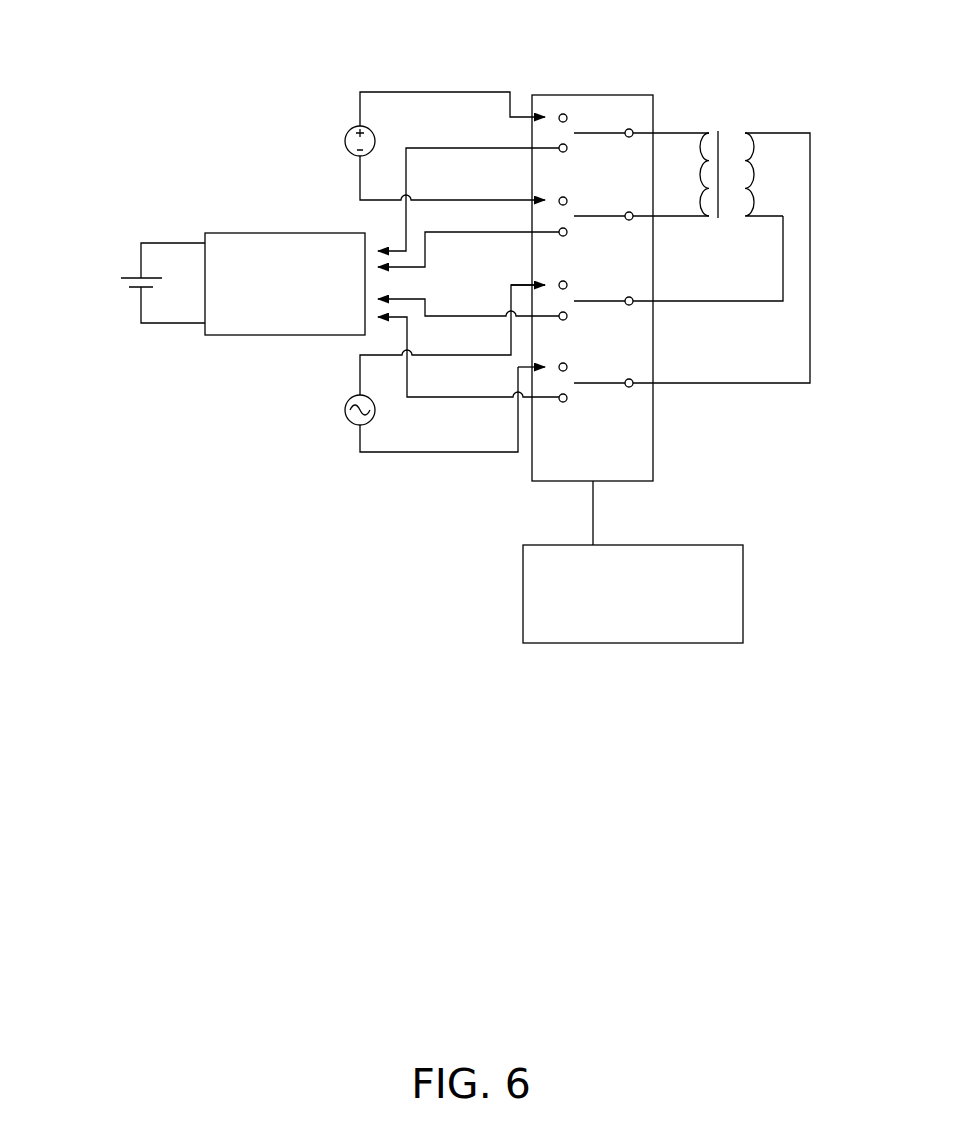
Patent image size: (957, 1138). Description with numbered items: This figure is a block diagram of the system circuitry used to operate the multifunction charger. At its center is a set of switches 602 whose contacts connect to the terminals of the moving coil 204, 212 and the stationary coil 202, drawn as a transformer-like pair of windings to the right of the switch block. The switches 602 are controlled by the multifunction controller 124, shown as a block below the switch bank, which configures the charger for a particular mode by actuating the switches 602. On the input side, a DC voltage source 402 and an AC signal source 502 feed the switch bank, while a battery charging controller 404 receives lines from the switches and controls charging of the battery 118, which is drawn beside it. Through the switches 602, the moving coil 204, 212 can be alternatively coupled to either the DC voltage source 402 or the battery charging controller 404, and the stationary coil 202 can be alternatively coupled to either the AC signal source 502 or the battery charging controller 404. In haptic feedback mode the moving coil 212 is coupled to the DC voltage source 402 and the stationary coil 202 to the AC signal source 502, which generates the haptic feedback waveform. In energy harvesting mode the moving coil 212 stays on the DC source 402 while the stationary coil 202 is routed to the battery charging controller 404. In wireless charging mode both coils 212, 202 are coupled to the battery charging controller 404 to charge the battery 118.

The battery 118 is at (118, 303).
The multifunction controller 124 is at (670, 645).
The stationary coil 202 is at (760, 108).
The primary coil 204 is at (701, 116).
The moving coil 212 is at (704, 174).
The DC voltage source 402 is at (348, 129).
The battery charging controller 404 is at (236, 338).
The AC signal source 502 is at (352, 423).
The set of switches 602 is at (653, 440).